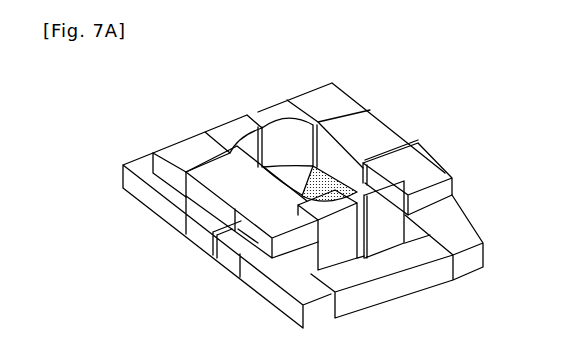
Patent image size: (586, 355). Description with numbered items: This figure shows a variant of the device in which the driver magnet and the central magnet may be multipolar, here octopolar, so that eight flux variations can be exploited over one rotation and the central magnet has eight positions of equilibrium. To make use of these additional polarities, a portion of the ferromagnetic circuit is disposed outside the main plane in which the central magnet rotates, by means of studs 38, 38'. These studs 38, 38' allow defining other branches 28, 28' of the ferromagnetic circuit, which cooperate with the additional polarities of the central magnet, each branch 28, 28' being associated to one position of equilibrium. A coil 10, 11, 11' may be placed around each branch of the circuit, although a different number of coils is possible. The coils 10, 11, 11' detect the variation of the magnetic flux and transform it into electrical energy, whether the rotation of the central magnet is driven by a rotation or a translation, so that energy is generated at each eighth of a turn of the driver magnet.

The coil 11 is at (214, 237).
The branch 28 is at (207, 140).
The coil 11' is at (367, 128).
The branch 28' is at (442, 177).
The stud 38 is at (330, 267).
The stud 38' is at (391, 260).
The coil 10 is at (428, 272).